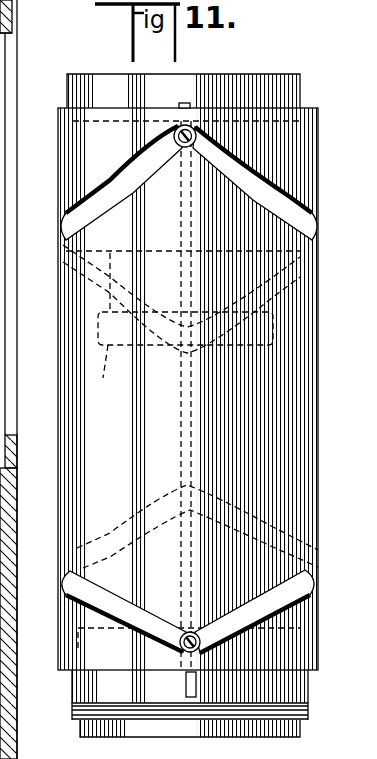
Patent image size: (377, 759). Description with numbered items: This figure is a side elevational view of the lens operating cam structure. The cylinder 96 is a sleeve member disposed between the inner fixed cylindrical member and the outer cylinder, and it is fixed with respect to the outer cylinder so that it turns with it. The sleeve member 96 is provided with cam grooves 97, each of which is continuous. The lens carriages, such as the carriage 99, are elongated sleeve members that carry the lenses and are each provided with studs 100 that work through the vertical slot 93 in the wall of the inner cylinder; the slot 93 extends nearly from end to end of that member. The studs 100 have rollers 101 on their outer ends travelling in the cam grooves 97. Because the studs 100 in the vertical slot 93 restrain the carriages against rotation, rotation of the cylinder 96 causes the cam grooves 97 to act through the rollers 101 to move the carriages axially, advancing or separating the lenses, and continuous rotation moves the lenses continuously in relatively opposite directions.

The vertical slot 93 is at (186, 102).
The cylinder 96 is at (72, 462).
The cam grooves 97 is at (110, 180).
The carriage 99 is at (97, 629).
The studs 100 is at (173, 137).
The rollers 101 is at (201, 137).